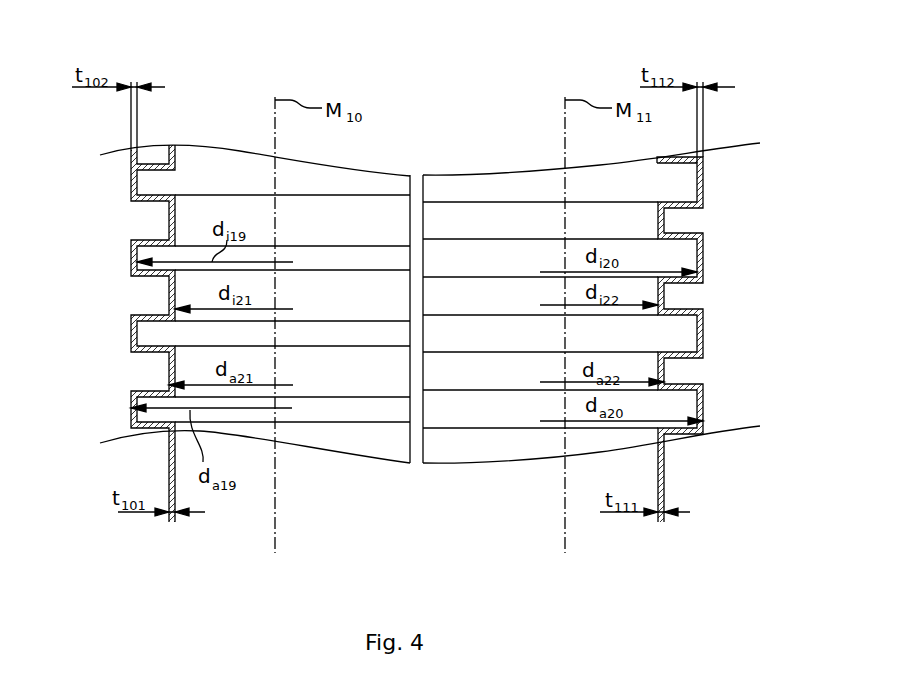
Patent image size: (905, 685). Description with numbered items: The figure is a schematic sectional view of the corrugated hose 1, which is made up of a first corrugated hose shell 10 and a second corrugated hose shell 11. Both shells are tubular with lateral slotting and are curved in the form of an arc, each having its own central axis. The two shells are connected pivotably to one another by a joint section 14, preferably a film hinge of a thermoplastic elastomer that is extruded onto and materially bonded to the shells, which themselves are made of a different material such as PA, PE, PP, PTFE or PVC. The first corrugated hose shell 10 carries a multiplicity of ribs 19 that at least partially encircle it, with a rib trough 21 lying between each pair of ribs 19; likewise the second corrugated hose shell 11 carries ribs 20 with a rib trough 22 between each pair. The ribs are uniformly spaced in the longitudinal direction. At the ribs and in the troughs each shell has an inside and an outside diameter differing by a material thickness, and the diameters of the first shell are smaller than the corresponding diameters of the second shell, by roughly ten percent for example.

The corrugated hose 1 is at (417, 92).
The first corrugated hose shell 10 is at (318, 458).
The second corrugated hose shell 11 is at (503, 465).
The joint section 14 is at (418, 178).
The ribs 19 is at (131, 180).
The ribs 20 is at (703, 182).
The rib trough 21 is at (170, 218).
The rib trough 22 is at (664, 225).